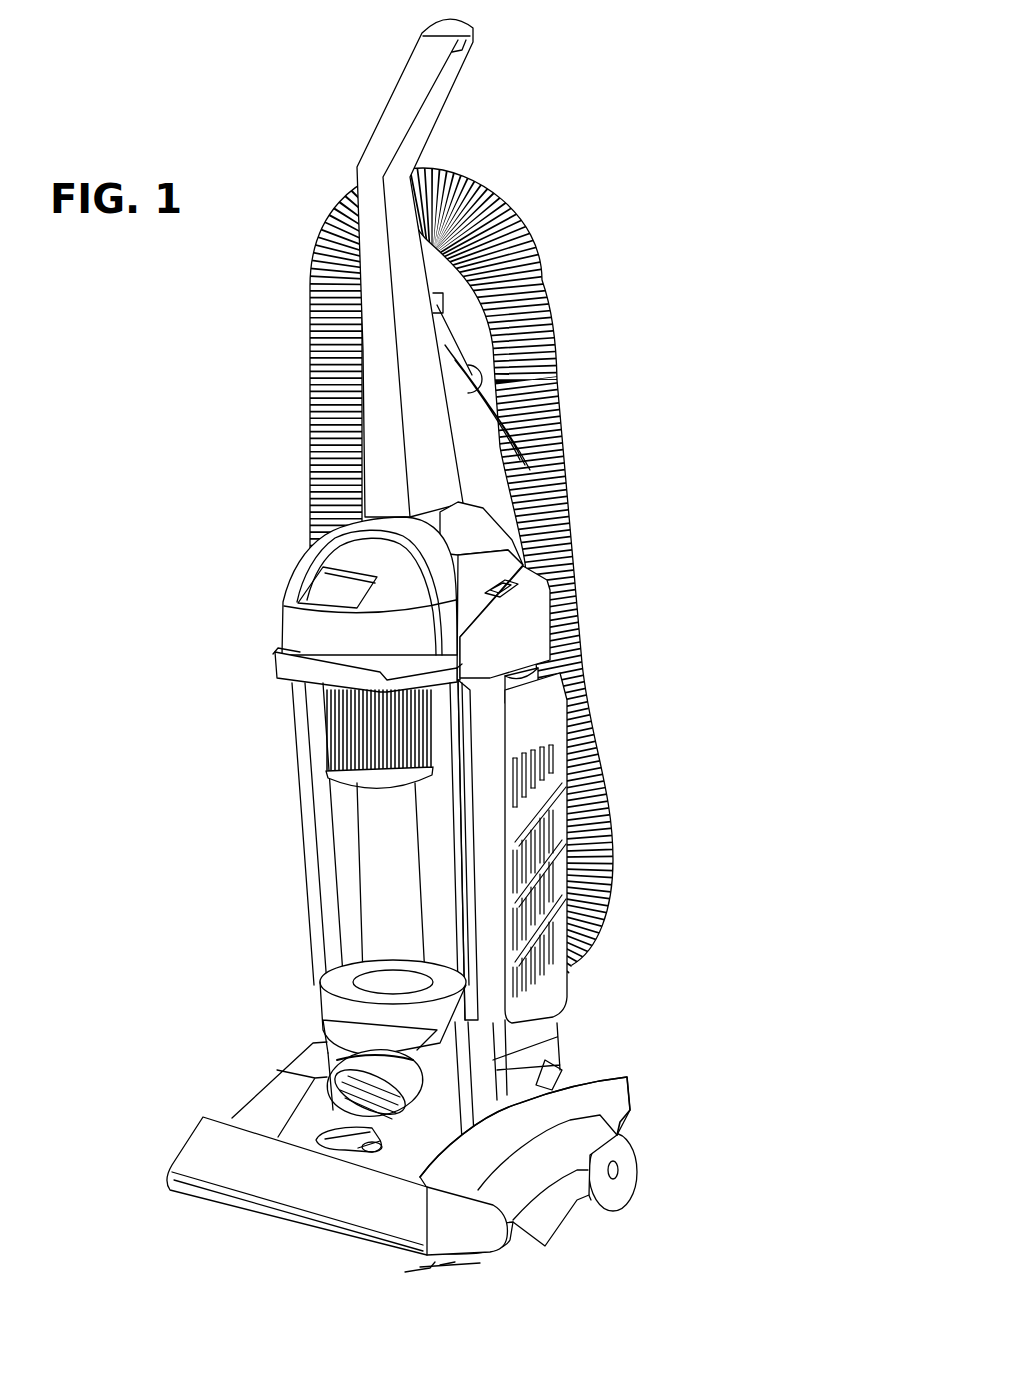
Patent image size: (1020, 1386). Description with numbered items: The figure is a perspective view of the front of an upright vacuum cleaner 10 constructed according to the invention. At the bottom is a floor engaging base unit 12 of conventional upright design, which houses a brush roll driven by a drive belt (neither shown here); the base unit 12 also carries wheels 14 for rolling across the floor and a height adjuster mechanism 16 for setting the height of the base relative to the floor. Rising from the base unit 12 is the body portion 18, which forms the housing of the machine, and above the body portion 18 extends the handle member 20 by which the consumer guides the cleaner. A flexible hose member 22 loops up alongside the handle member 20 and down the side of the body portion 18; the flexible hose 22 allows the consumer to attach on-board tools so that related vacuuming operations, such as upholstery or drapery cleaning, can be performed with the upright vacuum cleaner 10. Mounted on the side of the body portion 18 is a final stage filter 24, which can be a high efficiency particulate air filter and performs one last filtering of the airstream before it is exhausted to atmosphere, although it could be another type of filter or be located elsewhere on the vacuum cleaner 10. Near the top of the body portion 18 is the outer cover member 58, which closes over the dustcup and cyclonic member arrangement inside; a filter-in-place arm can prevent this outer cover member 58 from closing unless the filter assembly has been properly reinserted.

The vacuum cleaner 10 is at (695, 632).
The base unit 12 is at (262, 1096).
The wheels 14 is at (628, 1175).
The height adjuster mechanism 16 is at (358, 1145).
The body portion 18 is at (300, 837).
The handle member 20 is at (383, 118).
The flexible hose member 22 is at (560, 368).
The final stage filter 24 is at (572, 988).
The outer cover member 58 is at (283, 632).